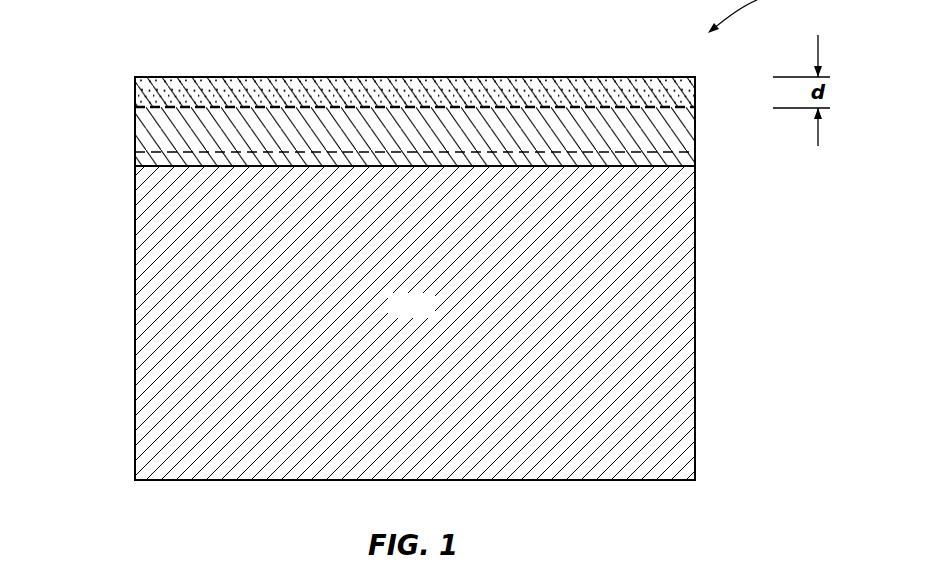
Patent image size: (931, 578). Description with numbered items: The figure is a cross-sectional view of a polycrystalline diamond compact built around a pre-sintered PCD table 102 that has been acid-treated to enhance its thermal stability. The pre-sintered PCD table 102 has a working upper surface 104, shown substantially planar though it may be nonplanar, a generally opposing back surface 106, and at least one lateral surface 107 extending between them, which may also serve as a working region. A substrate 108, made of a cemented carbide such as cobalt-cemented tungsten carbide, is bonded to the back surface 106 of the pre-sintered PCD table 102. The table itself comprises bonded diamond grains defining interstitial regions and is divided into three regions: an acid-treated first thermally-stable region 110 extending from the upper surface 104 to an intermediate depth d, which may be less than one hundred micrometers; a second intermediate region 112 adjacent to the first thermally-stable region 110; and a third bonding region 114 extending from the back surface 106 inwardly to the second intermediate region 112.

The pre-sintered PCD table 102 is at (115, 77).
The working upper surface 104 is at (252, 77).
The back surface 106 is at (660, 167).
The lateral surface 107 is at (135, 78).
The substrate 108 is at (393, 314).
The first thermally-stable region 110 is at (702, 77).
The second intermediate region 112 is at (702, 107).
The third bonding region 114 is at (702, 152).